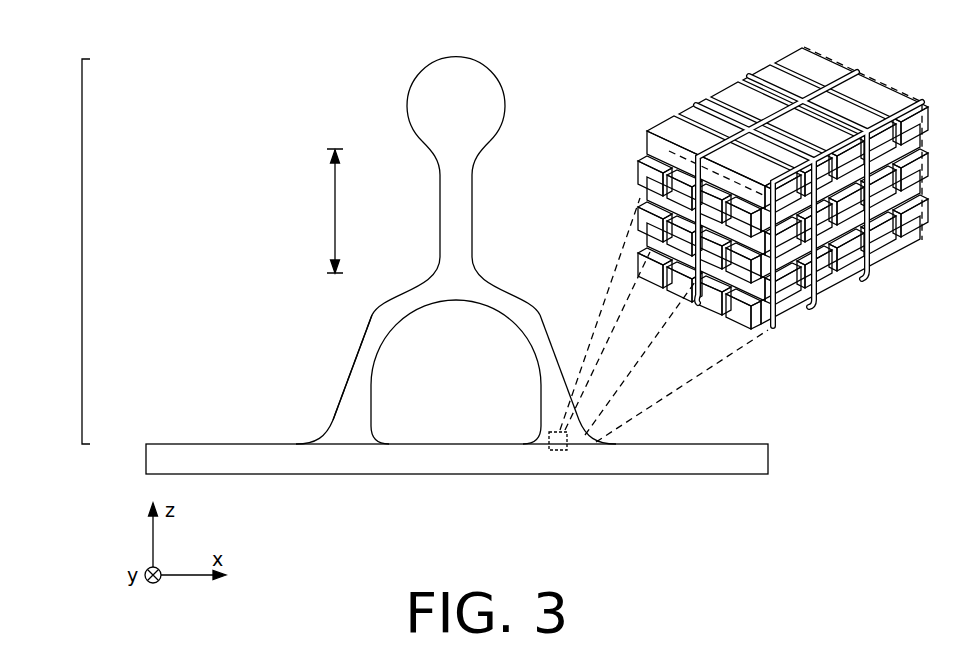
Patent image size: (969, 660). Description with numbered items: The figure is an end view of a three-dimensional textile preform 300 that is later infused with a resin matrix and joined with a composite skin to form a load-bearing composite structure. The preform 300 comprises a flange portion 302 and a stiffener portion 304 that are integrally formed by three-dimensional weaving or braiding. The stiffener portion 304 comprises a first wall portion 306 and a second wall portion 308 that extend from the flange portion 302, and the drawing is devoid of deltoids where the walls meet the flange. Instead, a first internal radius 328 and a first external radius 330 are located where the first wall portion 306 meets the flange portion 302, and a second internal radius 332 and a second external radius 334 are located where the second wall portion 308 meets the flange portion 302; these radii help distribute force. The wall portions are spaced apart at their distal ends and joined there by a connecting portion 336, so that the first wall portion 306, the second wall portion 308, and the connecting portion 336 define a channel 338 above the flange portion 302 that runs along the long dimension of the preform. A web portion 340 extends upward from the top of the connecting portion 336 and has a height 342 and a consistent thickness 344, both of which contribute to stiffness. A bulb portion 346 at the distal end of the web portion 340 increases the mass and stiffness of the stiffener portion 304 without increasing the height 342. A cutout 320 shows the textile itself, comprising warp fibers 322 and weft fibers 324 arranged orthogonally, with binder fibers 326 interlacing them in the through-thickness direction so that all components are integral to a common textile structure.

The 3D textile preform 300 is at (316, 52).
The flange portion 302 is at (211, 436).
The stiffener portion 304 is at (80, 252).
The first wall portion 306 is at (349, 358).
The second wall portion 308 is at (553, 314).
The cutout 320 is at (562, 460).
The warp fibers 322 is at (790, 61).
The weft fibers 324 is at (640, 158).
The binder fibers 326 is at (832, 82).
The first internal radius 328 is at (380, 430).
The first external radius 330 is at (323, 437).
The second internal radius 332 is at (537, 428).
The second external radius 334 is at (598, 438).
The connecting portion 336 is at (468, 275).
The channel 338 is at (440, 346).
The web portion 340 is at (478, 227).
The height 342 is at (335, 213).
The thickness 344 is at (472, 185).
The bulb portion 346 is at (404, 99).